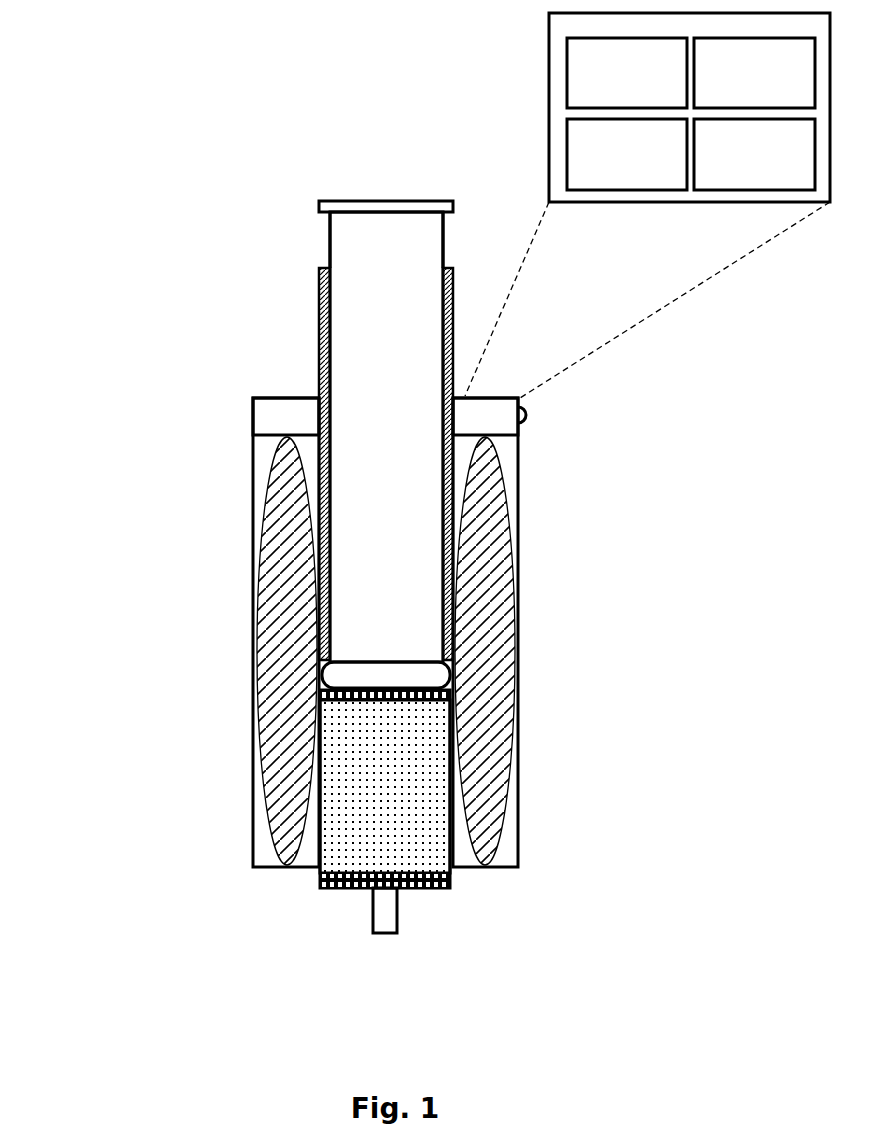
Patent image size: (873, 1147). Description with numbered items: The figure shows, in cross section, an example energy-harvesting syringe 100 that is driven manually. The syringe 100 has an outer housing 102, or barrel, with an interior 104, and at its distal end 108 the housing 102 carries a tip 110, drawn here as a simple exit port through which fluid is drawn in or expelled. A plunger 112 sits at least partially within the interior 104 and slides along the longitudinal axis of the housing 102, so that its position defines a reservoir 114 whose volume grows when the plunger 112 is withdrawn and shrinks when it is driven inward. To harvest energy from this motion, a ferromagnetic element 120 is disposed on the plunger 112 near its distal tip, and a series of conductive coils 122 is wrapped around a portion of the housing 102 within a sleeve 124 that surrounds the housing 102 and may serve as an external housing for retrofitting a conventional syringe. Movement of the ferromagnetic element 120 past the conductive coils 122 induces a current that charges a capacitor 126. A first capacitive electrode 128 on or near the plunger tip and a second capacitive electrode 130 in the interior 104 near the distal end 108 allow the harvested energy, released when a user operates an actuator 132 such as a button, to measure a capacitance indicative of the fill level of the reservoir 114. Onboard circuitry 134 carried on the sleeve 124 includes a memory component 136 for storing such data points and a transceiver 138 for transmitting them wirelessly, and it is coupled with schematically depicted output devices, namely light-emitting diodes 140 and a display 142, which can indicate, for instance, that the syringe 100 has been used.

The energy-harvesting syringe 100 is at (135, 358).
The outer housing 102 is at (318, 357).
The interior 104 is at (368, 268).
The distal end 108 is at (350, 888).
The tip 110 is at (400, 913).
The plunger 112 is at (445, 253).
The reservoir 114 is at (348, 857).
The ferromagnetic element 120 is at (347, 670).
The conductive coils 122 is at (268, 640).
The sleeve 124 is at (253, 490).
The capacitor 126 is at (263, 417).
The first capacitive electrode 128 is at (422, 700).
The second capacitive electrode 130 is at (428, 873).
The actuator 132 is at (528, 423).
The onboard circuitry 134 is at (485, 416).
The memory component 136 is at (627, 154).
The transceiver 138 is at (754, 154).
The light-emitting diodes 140 is at (627, 73).
The display 142 is at (754, 73).